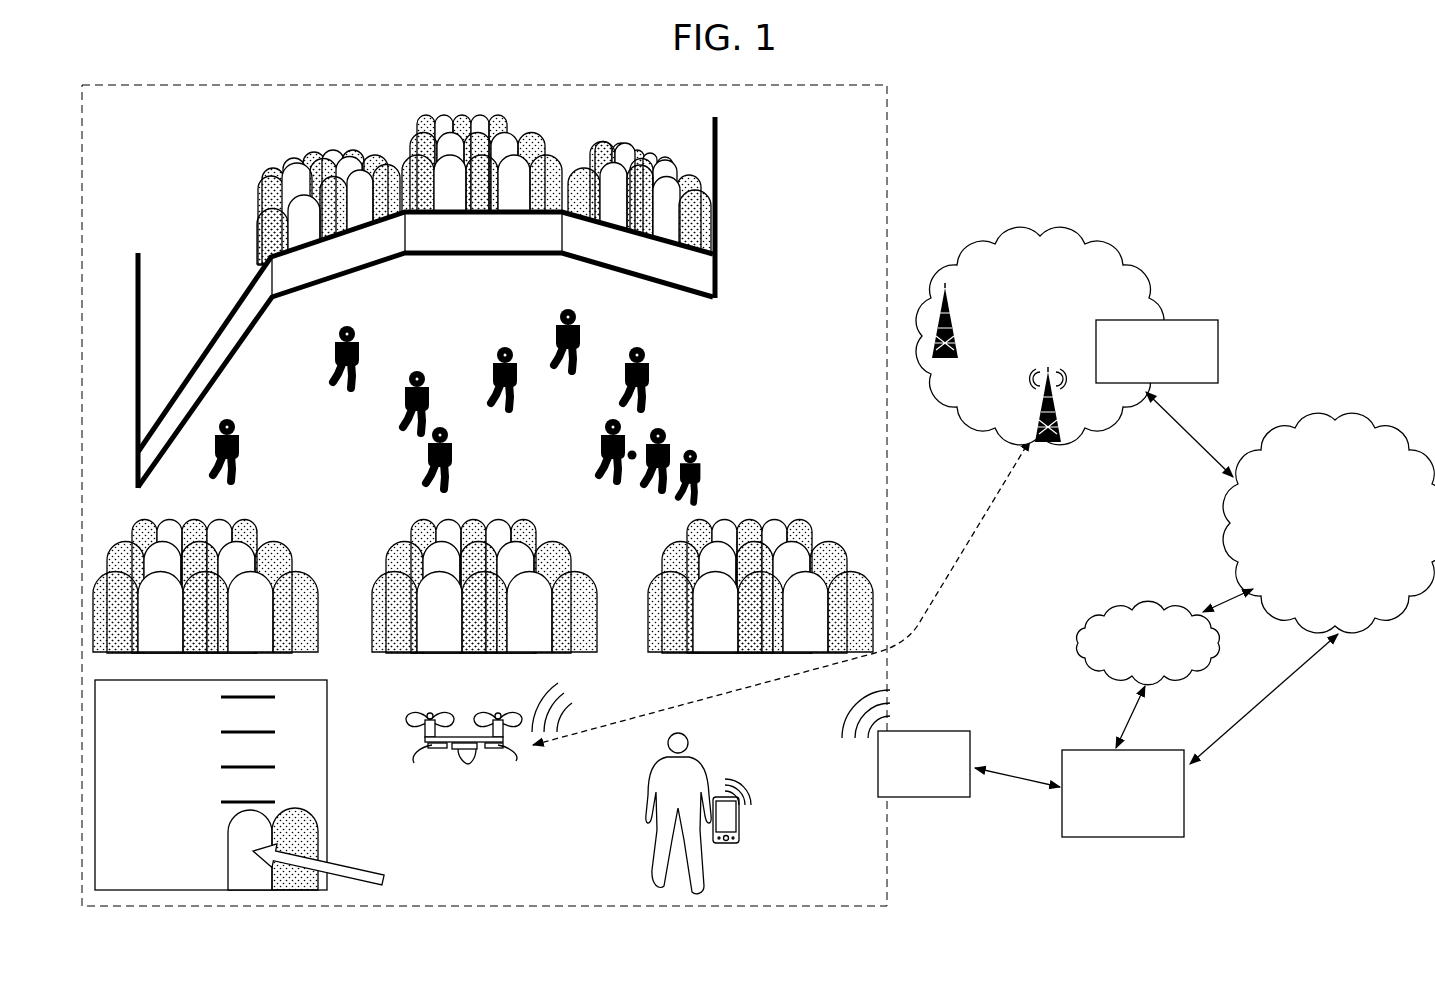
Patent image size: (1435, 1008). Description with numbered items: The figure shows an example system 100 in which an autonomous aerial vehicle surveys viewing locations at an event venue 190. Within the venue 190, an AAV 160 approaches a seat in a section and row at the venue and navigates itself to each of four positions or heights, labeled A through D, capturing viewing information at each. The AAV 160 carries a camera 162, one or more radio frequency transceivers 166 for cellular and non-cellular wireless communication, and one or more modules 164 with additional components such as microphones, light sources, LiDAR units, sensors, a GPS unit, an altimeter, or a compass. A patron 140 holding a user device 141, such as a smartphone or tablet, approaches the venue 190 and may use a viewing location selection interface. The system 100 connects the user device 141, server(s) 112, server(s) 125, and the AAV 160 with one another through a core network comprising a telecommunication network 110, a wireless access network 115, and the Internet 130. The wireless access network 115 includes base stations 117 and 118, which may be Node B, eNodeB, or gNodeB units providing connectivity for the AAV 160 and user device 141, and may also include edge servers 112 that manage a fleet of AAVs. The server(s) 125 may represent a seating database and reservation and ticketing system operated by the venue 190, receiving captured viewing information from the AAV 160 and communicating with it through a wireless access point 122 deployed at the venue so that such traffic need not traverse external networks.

The system 100 is at (225, 66).
The event venue 190 is at (172, 133).
The telecommunication network 110 is at (1324, 512).
The server(s) 112 is at (1141, 375).
The wireless access network(s) 115 is at (1024, 321).
The base station 117 is at (976, 337).
The base station 118 is at (1050, 443).
The wireless access point 122 is at (908, 786).
The server(s) 125 is at (1107, 818).
The Internet 130 is at (1132, 661).
The patron 140 is at (697, 873).
The user device 141 is at (719, 797).
The autonomous aerial vehicle 160 is at (414, 738).
The camera 162 is at (468, 755).
The module(s) 164 is at (435, 749).
The radio frequency transceivers 166 is at (490, 755).